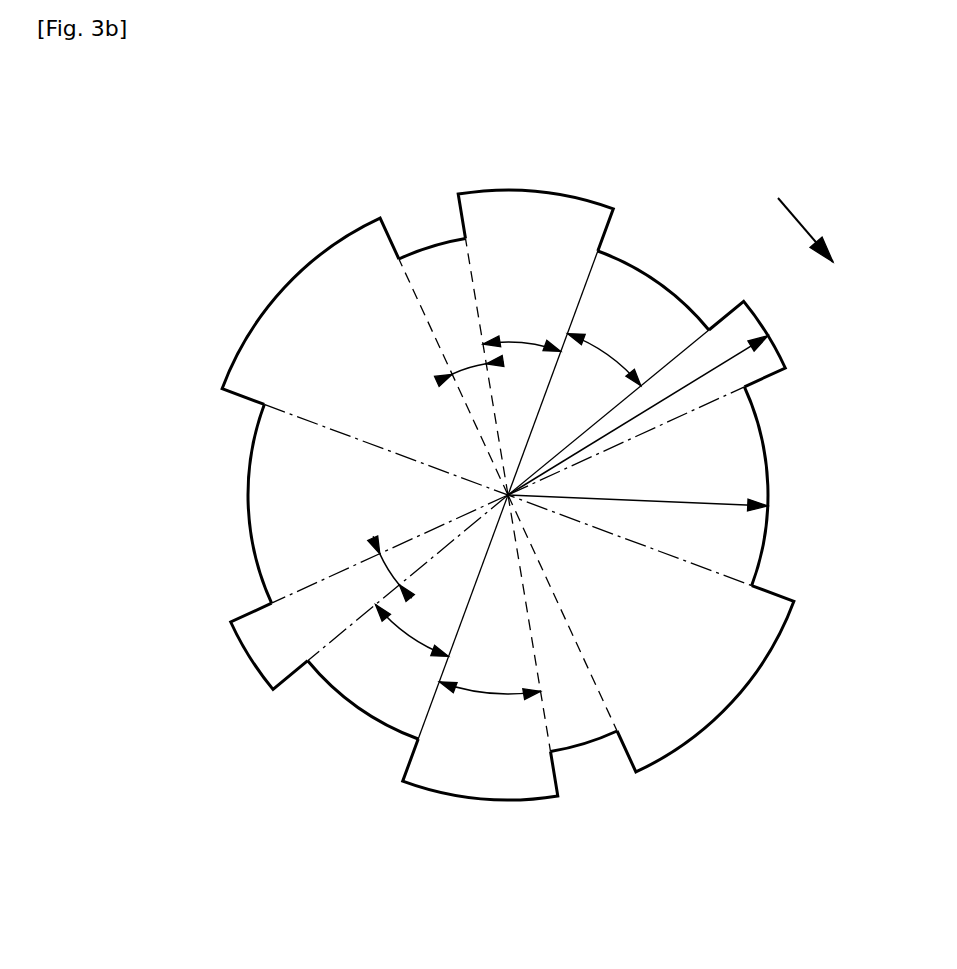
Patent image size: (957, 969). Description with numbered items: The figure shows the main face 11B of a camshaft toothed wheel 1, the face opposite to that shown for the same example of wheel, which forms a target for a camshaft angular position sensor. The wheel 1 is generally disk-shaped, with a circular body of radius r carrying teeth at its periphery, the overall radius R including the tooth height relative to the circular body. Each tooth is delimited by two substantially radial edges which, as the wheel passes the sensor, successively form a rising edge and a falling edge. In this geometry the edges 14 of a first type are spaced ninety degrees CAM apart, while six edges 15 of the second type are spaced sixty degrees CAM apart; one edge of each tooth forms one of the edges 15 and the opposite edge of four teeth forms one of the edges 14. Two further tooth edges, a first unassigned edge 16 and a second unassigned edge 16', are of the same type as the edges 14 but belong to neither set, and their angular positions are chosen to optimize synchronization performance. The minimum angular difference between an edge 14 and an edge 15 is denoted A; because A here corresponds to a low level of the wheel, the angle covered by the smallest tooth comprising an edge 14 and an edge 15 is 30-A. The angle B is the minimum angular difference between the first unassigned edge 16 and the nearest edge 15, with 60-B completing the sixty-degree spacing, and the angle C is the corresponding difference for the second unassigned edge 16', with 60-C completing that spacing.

The camshaft toothed wheel 1 is at (230, 238).
The main face 11B is at (293, 473).
The edges spaced 90° apart 14 is at (388, 232).
The edges spaced 60° apart 15 is at (462, 235).
The first unassigned edge 16 is at (319, 729).
The second unassigned edge 16' is at (695, 261).
The wheel radius R is at (700, 395).
The circular body radius r is at (638, 486).
The minimum angular difference A is at (455, 372).
The minimum angular difference B is at (489, 675).
The minimum angular difference C is at (522, 325).
The angle covered by smallest tooth 30-A is at (385, 570).
The angular gap 60-B is at (392, 647).
The angular gap 60-C is at (616, 345).